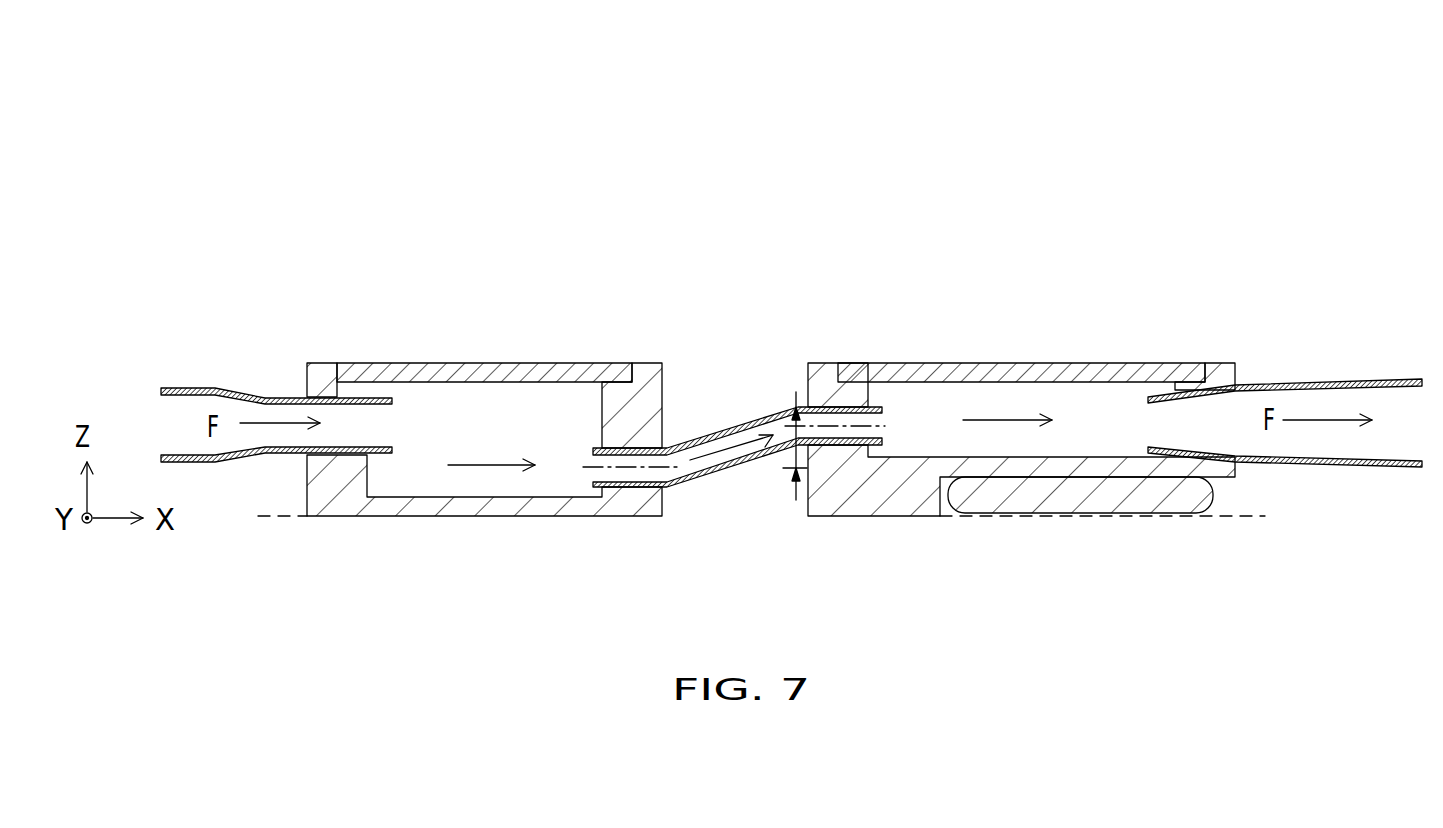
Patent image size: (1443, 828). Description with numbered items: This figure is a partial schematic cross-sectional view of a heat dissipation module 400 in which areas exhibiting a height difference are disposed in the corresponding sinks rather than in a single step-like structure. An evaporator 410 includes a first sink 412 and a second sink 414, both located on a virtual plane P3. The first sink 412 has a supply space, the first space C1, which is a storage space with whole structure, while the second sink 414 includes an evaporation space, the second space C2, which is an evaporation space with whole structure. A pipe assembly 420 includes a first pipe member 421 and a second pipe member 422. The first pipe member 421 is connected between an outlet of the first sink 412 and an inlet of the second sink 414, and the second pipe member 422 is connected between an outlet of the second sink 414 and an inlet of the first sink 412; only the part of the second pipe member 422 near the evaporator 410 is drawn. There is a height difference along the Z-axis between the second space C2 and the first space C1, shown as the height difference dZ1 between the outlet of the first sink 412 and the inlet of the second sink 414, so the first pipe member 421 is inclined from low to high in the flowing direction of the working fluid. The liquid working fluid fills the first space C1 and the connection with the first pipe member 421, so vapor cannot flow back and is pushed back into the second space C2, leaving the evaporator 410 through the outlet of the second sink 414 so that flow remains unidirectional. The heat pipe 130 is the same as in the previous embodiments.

The heat dissipation module 400 is at (1327, 205).
The evaporator 410 is at (191, 48).
The first sink 412 is at (645, 378).
The second sink 414 is at (1213, 362).
The pipe assembly 420 is at (191, 150).
The first pipe member 421 is at (745, 421).
The second pipe member 422 is at (1343, 377).
The heat pipe 130 is at (1068, 497).
The first space C1 is at (462, 408).
The second space C2 is at (941, 408).
The virtual plane P3 is at (1242, 521).
The height difference dZ1 is at (793, 463).